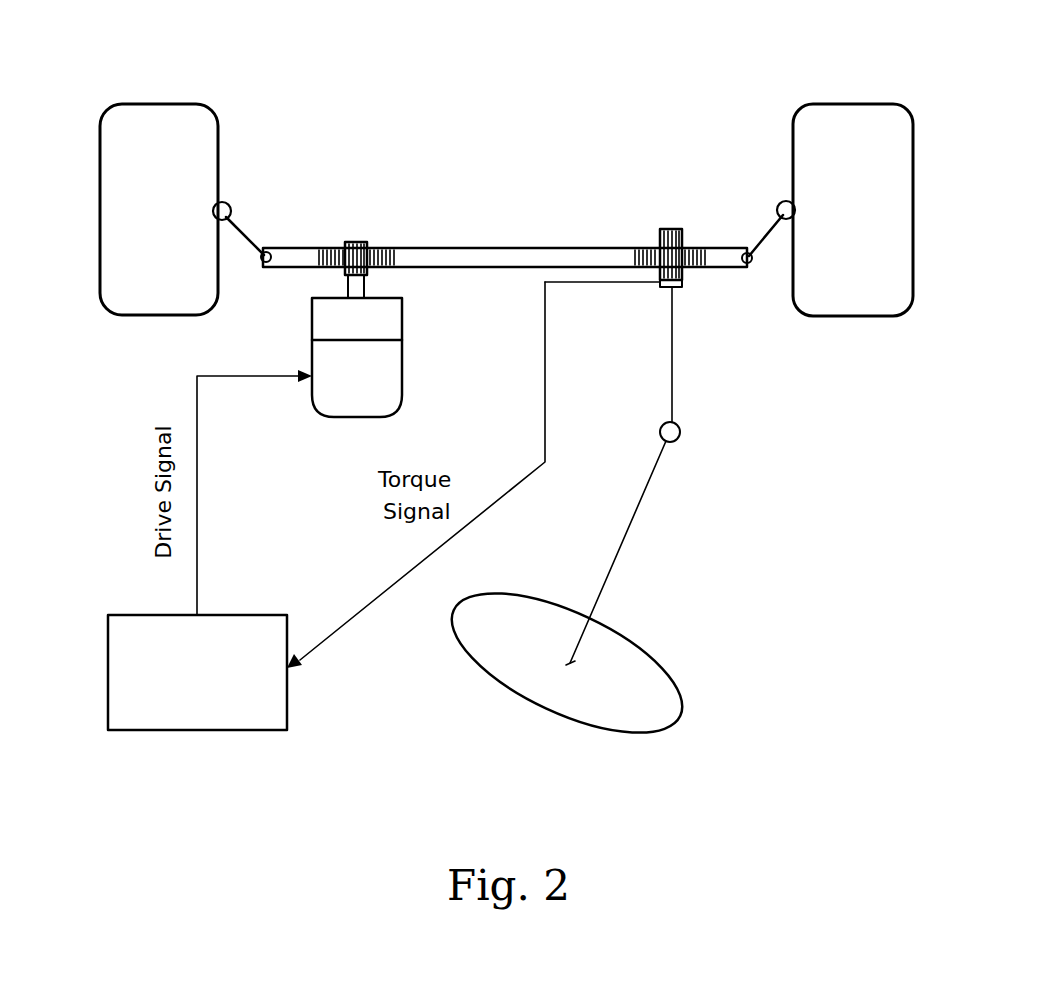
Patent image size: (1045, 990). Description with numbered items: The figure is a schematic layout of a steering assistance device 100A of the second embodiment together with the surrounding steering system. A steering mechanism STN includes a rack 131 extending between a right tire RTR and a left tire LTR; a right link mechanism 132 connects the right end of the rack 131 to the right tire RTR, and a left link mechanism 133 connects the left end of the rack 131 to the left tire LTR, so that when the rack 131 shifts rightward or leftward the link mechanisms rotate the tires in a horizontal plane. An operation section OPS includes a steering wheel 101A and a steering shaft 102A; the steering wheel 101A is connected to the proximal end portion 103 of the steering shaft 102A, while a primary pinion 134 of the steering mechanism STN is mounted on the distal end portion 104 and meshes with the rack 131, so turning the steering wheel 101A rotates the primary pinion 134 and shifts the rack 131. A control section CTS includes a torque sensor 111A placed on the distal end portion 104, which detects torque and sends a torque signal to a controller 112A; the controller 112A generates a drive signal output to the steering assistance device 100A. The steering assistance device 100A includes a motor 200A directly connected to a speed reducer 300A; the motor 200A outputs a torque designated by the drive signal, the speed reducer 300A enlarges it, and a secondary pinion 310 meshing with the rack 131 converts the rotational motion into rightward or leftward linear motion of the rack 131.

The left tire LTR is at (156, 104).
The right tire RTR is at (866, 104).
The left link mechanism 133 is at (245, 230).
The right link mechanism 132 is at (767, 230).
The rack 131 is at (512, 248).
The secondary pinion 310 is at (358, 241).
The primary pinion 134 is at (670, 226).
The speed reducer 300A is at (403, 325).
The motor 200A is at (403, 381).
The steering assistance device 100A is at (300, 423).
The torque sensor 111A is at (660, 289).
The distal end portion 104 is at (677, 290).
The steering mechanism STN is at (742, 288).
The steering shaft 102A is at (662, 483).
The steering wheel 101A is at (633, 726).
The proximal end portion 103 is at (570, 663).
The operation section OPS is at (733, 622).
The control section CTS is at (105, 741).
The controller 112A is at (288, 731).